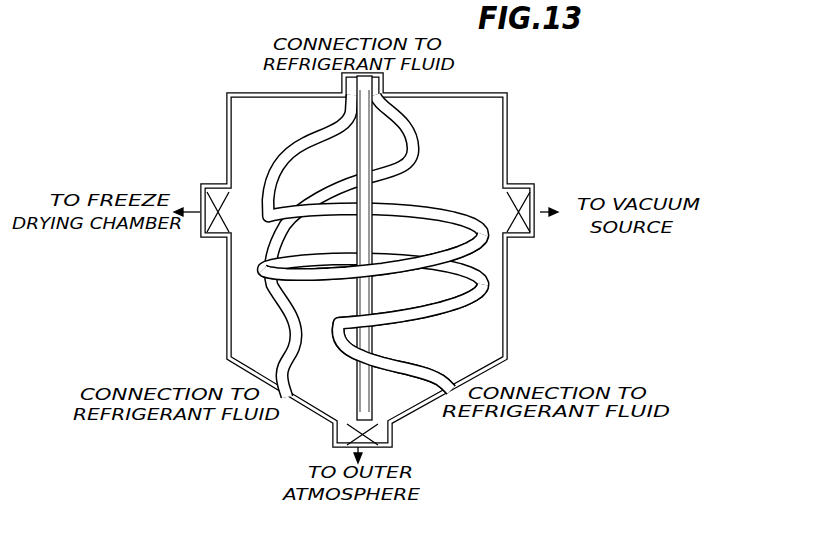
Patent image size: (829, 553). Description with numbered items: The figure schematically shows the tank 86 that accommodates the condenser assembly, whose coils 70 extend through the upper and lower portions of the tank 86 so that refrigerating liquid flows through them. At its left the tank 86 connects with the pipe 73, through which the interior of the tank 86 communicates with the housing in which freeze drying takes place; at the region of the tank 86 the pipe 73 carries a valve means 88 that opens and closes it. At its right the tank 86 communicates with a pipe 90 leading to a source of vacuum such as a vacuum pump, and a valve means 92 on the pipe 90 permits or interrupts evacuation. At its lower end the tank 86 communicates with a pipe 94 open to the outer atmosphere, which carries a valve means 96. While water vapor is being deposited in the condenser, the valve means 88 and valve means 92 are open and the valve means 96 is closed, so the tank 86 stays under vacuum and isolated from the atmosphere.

The coils 70 is at (289, 151).
The pipe 73 is at (213, 238).
The tank 86 is at (323, 416).
The valve means 88 is at (199, 231).
The pipe 90 is at (521, 189).
The valve means 92 is at (535, 236).
The pipe 94 is at (391, 437).
The valve means 96 is at (378, 449).